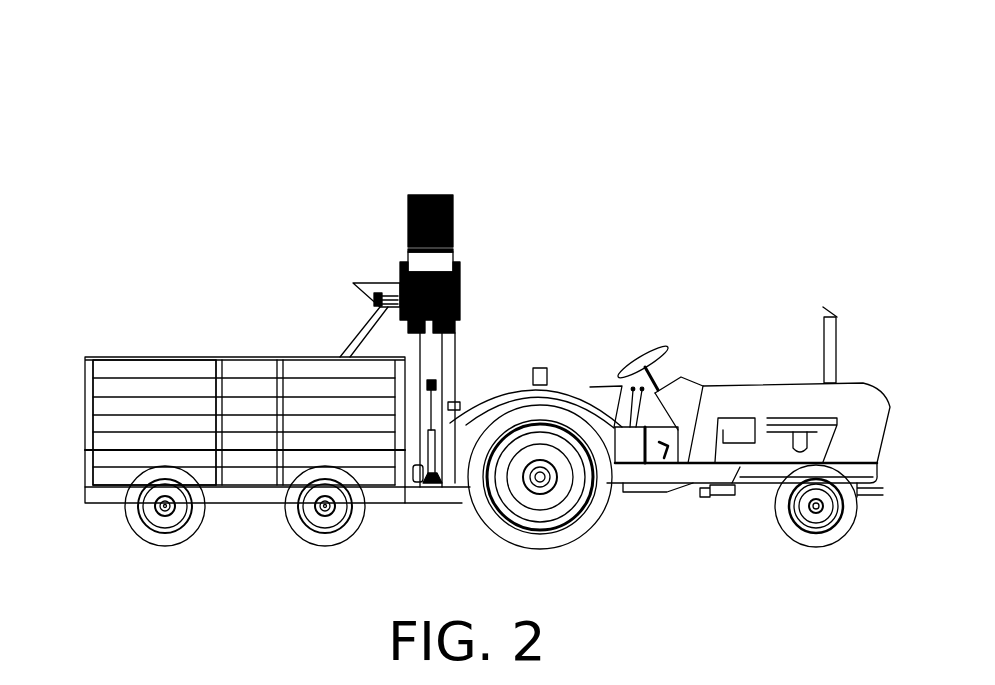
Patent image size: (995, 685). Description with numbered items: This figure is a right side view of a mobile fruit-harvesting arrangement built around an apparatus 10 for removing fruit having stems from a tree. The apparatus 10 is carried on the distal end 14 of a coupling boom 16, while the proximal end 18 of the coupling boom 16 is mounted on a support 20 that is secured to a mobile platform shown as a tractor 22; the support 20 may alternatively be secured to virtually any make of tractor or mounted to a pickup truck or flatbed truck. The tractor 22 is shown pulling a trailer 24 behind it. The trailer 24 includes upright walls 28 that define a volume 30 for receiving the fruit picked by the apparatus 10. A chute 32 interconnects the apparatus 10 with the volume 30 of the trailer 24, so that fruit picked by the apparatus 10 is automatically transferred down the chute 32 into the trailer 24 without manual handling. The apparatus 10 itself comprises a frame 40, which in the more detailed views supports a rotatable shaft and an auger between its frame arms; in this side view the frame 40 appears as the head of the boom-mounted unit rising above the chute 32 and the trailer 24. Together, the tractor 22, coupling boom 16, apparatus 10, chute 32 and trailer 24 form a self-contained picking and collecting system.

The apparatus 10 is at (452, 158).
The distal end 14 is at (460, 265).
The coupling boom 16 is at (448, 360).
The proximal end 18 is at (425, 487).
The support 20 is at (443, 477).
The tractor 22 is at (711, 471).
The trailer 24 is at (115, 432).
The upright walls 28 is at (127, 378).
The volume 30 is at (185, 377).
The chute 32 is at (360, 332).
The frame 40 is at (400, 275).